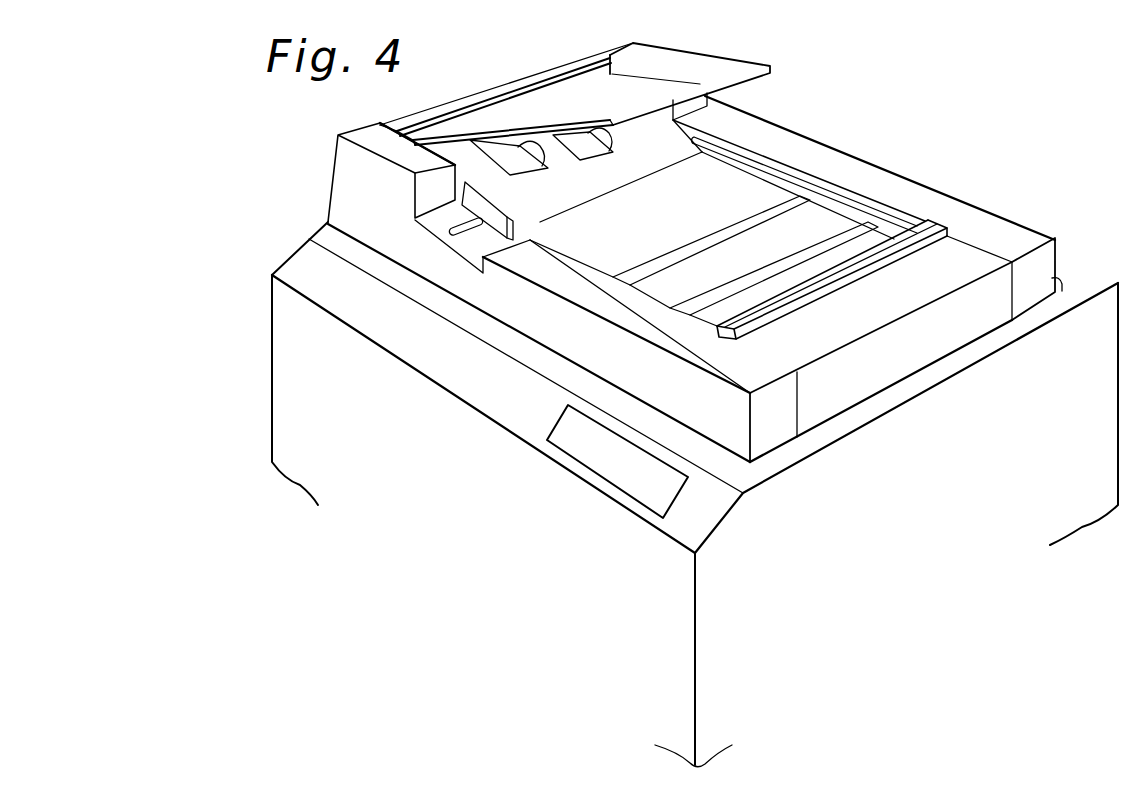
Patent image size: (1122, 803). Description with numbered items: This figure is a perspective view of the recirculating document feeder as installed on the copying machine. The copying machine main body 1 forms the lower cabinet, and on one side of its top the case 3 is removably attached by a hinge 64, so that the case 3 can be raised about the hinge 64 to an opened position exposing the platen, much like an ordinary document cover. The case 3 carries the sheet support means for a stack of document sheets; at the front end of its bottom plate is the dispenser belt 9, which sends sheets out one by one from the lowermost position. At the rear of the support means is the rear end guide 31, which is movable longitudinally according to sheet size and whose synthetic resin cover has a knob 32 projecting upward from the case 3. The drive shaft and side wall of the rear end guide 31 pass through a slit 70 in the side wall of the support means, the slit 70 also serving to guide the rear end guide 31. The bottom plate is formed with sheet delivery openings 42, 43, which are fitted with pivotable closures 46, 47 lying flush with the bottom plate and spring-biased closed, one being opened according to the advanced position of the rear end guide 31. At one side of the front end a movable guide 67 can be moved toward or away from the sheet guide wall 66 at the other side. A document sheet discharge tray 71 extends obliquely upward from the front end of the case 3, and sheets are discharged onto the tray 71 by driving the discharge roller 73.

The main body 1 is at (823, 446).
The case 3 is at (993, 198).
The dispenser belt 9 is at (526, 180).
The rear end guide 31 is at (892, 245).
The knob 32 is at (823, 280).
The sheet delivery opening 42 is at (712, 300).
The sheet delivery opening 43 is at (678, 277).
The closure 46 is at (782, 268).
The closure 47 is at (706, 243).
The hinge 64 is at (1057, 284).
The sheet guide wall 66 is at (778, 177).
The movable guide 67 is at (478, 205).
The slit 70 is at (827, 187).
The document sheet discharge tray 71 is at (666, 89).
The discharge roller 73 is at (474, 112).